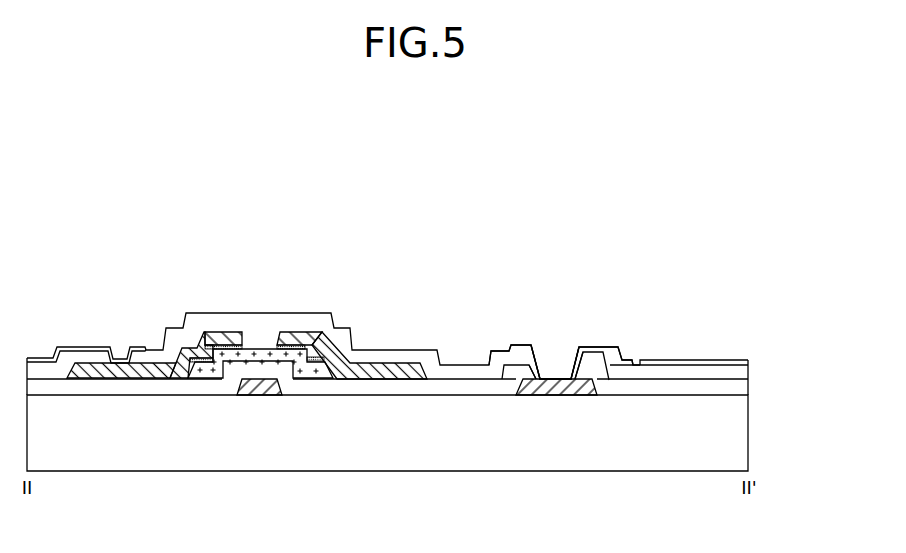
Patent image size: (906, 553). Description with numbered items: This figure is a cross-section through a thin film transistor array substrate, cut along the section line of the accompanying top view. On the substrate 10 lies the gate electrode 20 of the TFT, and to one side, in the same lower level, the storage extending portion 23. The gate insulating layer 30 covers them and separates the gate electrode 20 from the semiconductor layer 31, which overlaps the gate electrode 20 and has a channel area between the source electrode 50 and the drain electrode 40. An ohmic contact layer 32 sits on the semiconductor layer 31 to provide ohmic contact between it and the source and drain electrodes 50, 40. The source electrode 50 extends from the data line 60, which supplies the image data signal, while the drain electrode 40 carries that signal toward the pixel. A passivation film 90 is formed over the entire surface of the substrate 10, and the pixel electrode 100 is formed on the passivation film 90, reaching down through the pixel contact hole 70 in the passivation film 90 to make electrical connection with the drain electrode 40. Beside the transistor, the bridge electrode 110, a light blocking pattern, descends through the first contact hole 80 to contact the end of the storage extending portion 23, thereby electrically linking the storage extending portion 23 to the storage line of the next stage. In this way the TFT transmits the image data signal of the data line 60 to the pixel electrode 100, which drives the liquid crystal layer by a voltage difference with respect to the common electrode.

The substrate 10 is at (655, 465).
The gate electrode 20 is at (256, 388).
The storage extending portion 23 is at (590, 393).
The gate insulating layer 30 is at (193, 388).
The semiconductor layer 31 is at (311, 364).
The ohmic contact layer 32 is at (202, 355).
The drain electrode 40 is at (148, 366).
The source electrode 50 is at (348, 372).
The data line 60 is at (417, 372).
The pixel contact hole 70 is at (99, 366).
The first contact hole 80 is at (520, 393).
The passivation film 90 is at (465, 372).
The pixel electrode 100 is at (80, 347).
The bridge electrode 110 is at (605, 347).